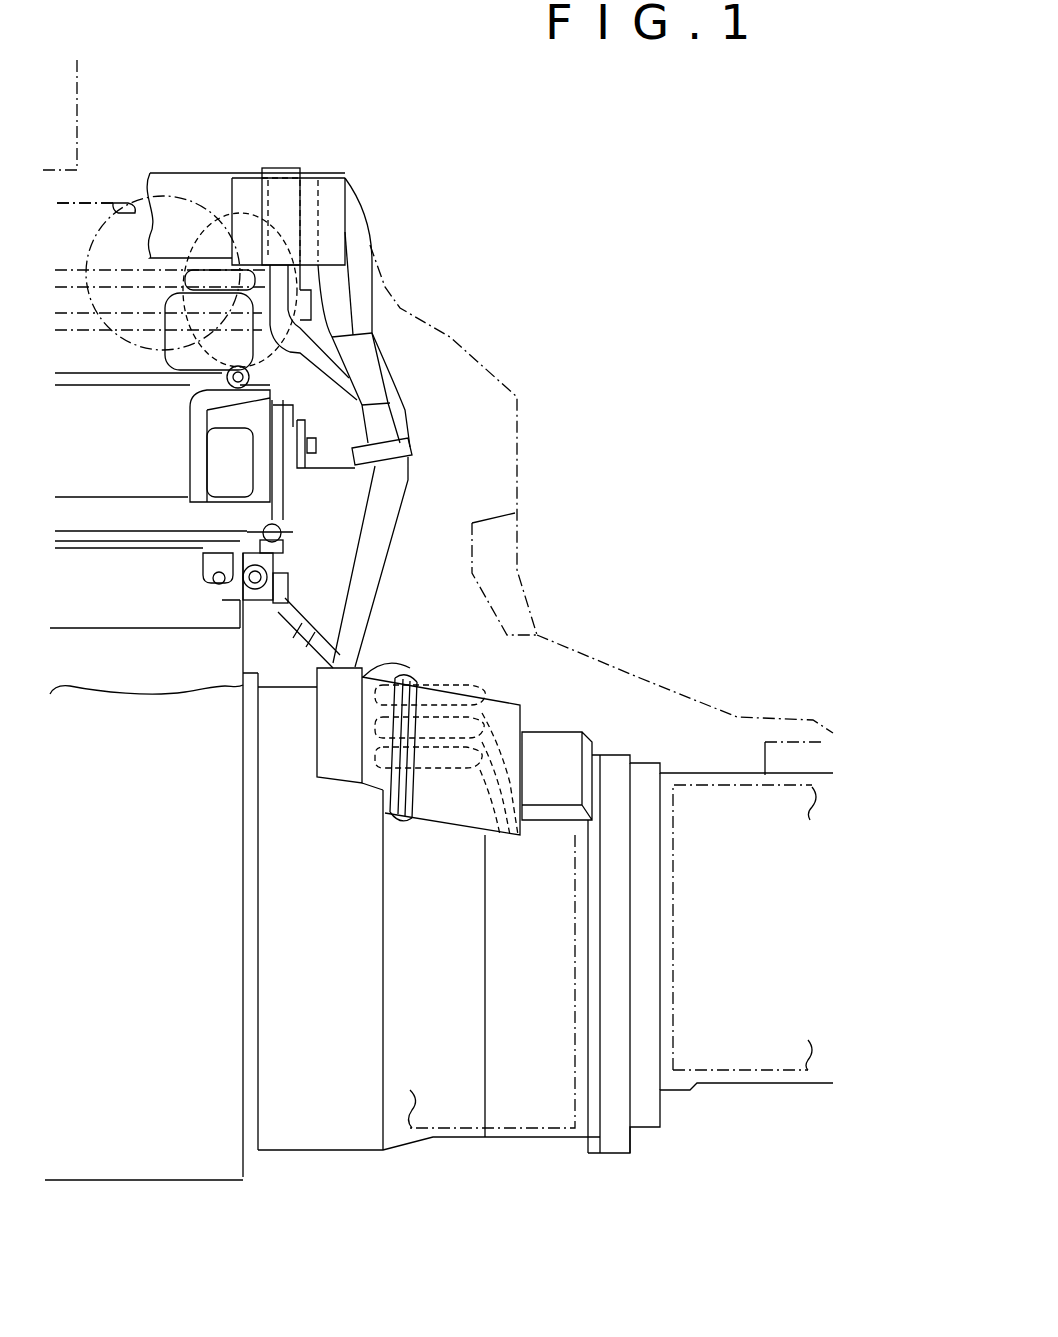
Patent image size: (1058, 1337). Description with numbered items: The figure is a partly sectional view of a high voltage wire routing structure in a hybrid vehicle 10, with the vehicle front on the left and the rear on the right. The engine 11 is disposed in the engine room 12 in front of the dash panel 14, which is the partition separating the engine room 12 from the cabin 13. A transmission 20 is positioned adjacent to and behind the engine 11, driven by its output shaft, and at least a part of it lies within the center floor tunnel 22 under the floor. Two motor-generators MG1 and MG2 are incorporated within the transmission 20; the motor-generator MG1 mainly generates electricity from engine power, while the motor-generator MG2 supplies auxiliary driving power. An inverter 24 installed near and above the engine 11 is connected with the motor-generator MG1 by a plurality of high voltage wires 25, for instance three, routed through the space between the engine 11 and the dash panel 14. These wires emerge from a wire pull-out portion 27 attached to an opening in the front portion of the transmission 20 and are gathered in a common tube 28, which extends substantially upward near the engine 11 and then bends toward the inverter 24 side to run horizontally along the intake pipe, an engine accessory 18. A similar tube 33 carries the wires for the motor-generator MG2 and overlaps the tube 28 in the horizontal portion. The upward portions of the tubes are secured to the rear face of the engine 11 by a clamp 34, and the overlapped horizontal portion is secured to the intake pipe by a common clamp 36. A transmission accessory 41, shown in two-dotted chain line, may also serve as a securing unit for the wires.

The hybrid vehicle 10 is at (400, 180).
The engine 11 is at (134, 1158).
The engine room 12 is at (460, 518).
The cabin 13 is at (620, 522).
The dash panel 14 is at (453, 337).
The engine accessory 18 is at (73, 207).
The transmission 20 is at (677, 1090).
The center floor tunnel 22 is at (663, 686).
The inverter 24 is at (80, 72).
The high voltage wires 25 is at (518, 824).
The wire pull-out portion 27 is at (522, 705).
The tube 28 is at (363, 612).
The tube 33 is at (401, 408).
The clamp 34 is at (412, 448).
The clamp 36 is at (279, 185).
The transmission accessory 41 is at (765, 750).
The motor-generator MG1 is at (528, 1137).
The motor-generator MG2 is at (797, 1075).